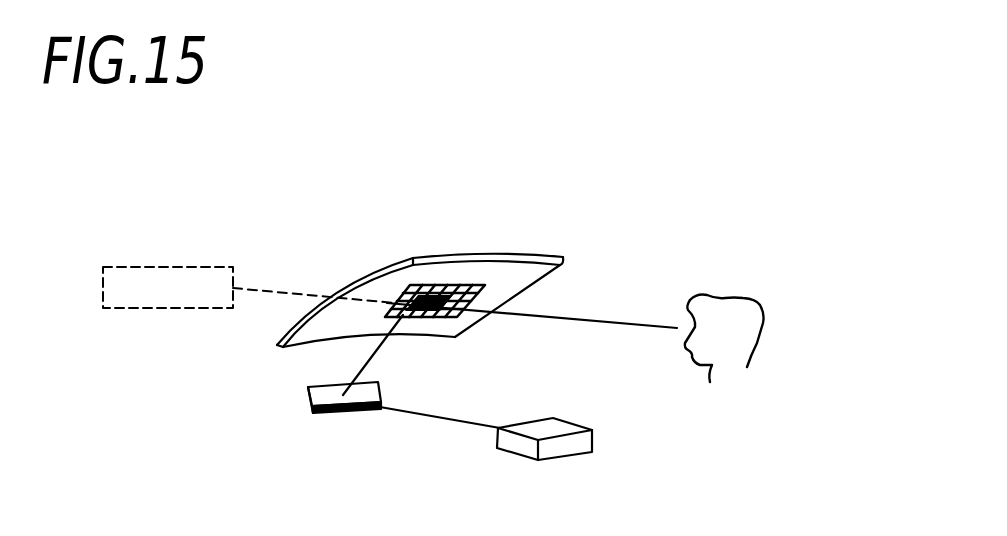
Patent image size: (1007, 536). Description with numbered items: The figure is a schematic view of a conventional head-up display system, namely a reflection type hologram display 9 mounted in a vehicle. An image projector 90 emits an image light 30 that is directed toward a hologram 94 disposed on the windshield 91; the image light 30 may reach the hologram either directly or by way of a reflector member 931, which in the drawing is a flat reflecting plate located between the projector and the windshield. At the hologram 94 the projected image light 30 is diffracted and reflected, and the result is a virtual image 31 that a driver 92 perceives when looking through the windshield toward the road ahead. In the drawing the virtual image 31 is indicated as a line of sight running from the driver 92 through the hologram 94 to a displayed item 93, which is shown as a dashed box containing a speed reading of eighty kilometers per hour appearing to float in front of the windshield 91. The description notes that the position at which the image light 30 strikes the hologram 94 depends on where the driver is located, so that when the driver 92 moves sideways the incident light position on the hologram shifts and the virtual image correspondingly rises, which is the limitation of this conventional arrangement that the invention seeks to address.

The reflection type hologram display 9 is at (495, 145).
The windshield 91 is at (443, 252).
The hologram 94 is at (485, 290).
The displayed image (80 km/h) 93 is at (165, 265).
The image light 30 is at (383, 350).
The reflector member 931 is at (330, 415).
The image projector 90 is at (523, 462).
The virtual image 31 is at (610, 318).
The driver 92 is at (747, 298).